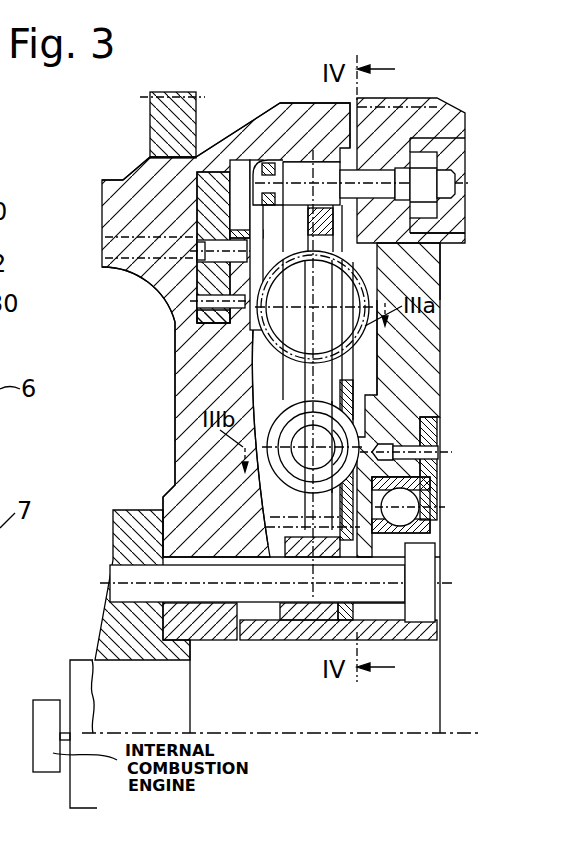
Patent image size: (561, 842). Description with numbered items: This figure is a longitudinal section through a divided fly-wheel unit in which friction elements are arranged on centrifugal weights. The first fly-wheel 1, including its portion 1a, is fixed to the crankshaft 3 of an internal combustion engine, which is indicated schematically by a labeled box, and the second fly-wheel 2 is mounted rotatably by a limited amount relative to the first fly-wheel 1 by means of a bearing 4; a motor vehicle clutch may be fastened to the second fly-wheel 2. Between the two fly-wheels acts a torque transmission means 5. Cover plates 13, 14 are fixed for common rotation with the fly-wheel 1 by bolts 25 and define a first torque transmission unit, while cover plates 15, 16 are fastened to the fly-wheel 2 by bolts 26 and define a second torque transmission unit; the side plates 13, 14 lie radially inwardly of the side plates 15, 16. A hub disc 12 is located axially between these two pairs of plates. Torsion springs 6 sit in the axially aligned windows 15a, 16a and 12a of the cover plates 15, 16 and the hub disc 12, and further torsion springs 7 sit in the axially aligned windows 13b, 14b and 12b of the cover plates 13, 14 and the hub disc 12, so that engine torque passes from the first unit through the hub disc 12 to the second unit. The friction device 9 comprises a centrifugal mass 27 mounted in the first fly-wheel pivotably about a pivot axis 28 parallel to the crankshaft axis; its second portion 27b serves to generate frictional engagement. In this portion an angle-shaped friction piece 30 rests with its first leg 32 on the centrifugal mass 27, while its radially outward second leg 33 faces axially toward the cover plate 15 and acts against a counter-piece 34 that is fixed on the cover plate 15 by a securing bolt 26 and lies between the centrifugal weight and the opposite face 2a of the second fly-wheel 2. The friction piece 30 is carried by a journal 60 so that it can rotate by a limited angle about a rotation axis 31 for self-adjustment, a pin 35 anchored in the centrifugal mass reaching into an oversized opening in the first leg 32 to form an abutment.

The first fly-wheel 1 is at (118, 203).
The housing flange portion 1a is at (197, 98).
The second fly-wheel 2 is at (382, 300).
The opposite face of the second fly-wheel 2a is at (444, 253).
The crankshaft 3 is at (123, 631).
The bearing 4 is at (440, 497).
The torque transmission means 5 is at (379, 372).
The torsion springs 6 is at (363, 336).
The torsion springs 7 is at (437, 418).
The friction device 9 is at (217, 198).
The hub disc 12 is at (323, 210).
The window of the central disc 12a is at (400, 208).
The window of the central disc 12b is at (330, 398).
The cover plate 13 is at (262, 500).
The window of cover plate 13 13b is at (250, 415).
The cover plate 14 is at (440, 558).
The window of cover plate 14 14b is at (355, 410).
The cover plate 15 is at (262, 160).
The window of cover plate 15 15a is at (180, 365).
The cover plate 16 is at (413, 231).
The window of cover plate 16 16a is at (430, 298).
The bolts 25 is at (425, 604).
The bolts 26 is at (365, 180).
The centrifugal mass 27 is at (203, 193).
The second portion of the centrifugal mass 27b is at (150, 97).
The pivot axis 28 is at (160, 262).
The friction piece 30 is at (205, 300).
The rotation axis 31 is at (197, 250).
The first leg 32 is at (200, 300).
The second leg 33 is at (182, 200).
The counter-piece 34 is at (239, 186).
The pin 35 is at (255, 320).
The journal 60 is at (190, 217).